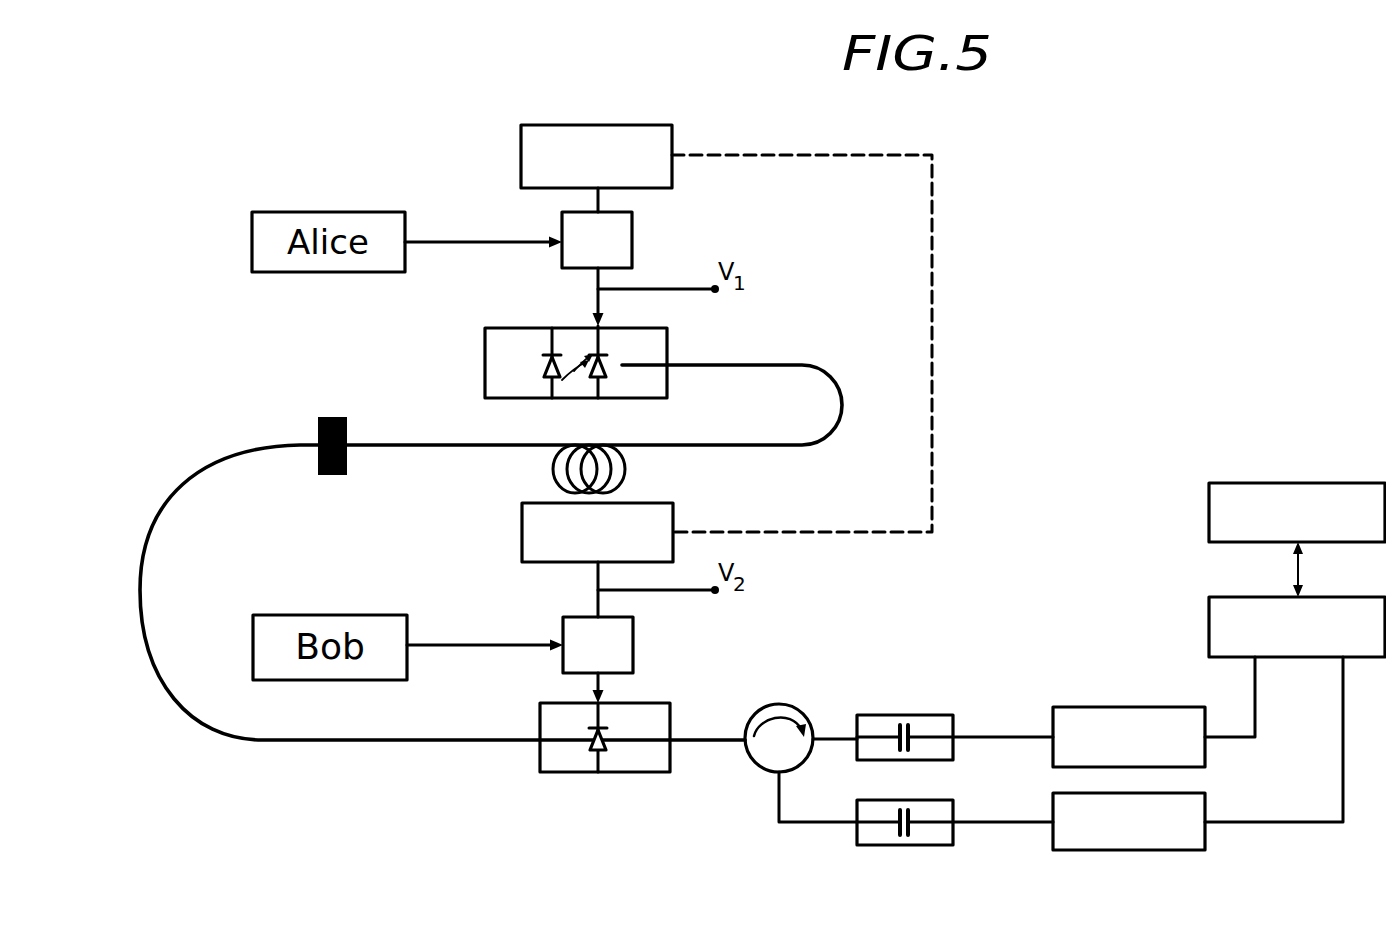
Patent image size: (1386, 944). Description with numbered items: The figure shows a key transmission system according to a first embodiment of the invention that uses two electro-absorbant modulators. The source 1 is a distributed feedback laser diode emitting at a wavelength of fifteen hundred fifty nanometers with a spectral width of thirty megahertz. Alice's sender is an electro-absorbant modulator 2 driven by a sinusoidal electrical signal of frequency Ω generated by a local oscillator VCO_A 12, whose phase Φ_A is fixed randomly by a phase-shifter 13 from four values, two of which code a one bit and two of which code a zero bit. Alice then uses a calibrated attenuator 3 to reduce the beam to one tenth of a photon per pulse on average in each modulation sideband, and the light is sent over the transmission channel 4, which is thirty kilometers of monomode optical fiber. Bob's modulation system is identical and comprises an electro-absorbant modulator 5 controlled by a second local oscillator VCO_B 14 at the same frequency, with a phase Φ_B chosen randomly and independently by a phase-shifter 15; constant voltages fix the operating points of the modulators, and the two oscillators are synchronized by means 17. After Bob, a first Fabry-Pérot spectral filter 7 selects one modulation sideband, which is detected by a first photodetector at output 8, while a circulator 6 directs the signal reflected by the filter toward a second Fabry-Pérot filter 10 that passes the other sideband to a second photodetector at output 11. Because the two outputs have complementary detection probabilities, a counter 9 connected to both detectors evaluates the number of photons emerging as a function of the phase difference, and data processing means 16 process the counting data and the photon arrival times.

The source 1 is at (545, 372).
The electro-absorbant modulator 2 is at (608, 363).
The calibrated attenuator 3 is at (330, 417).
The transmission channel 4 is at (140, 592).
The electro-absorbant modulator 5 is at (617, 757).
The circulator 6 is at (778, 705).
The first Fabry-Pérot spectral filter 7 is at (927, 722).
The output of photodetector D1 8 is at (1127, 712).
The counter 9 is at (1297, 627).
The second Fabry-Pérot filter 10 is at (920, 835).
The output of photodetector D2 11 is at (1125, 840).
The local oscillator VCO_A 12 is at (598, 125).
The phase-shifter 13 is at (632, 238).
The second local oscillator VCO_B 14 is at (522, 531).
The phase-shifter 15 is at (633, 645).
The data processing means 16 is at (1297, 512).
The synchronization means 17 is at (935, 348).